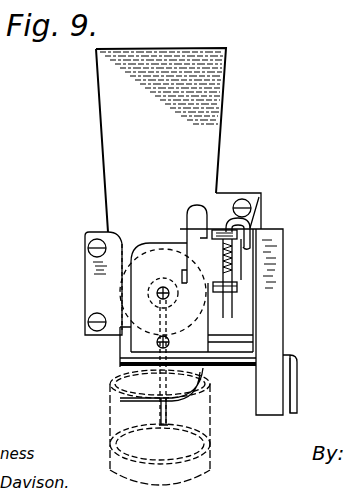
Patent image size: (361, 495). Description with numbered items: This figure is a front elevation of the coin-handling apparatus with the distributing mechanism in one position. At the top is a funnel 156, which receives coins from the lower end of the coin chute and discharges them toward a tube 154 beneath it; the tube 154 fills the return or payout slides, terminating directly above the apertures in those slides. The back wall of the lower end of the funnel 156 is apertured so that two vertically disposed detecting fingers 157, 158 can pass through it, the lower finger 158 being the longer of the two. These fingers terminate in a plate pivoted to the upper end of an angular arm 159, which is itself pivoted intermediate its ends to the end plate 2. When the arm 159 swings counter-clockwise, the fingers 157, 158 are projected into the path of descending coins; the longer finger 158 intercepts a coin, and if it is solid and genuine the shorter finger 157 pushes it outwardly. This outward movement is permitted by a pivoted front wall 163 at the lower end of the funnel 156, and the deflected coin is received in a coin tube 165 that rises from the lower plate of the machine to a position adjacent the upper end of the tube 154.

The end plate 2 is at (277, 312).
The tube 154 is at (195, 387).
The funnel 156 is at (210, 152).
The detecting finger 157 is at (157, 293).
The detecting finger 158 is at (157, 342).
The angular arm 159 is at (297, 400).
The front wall 163 is at (122, 381).
The coin tube 165 is at (218, 451).